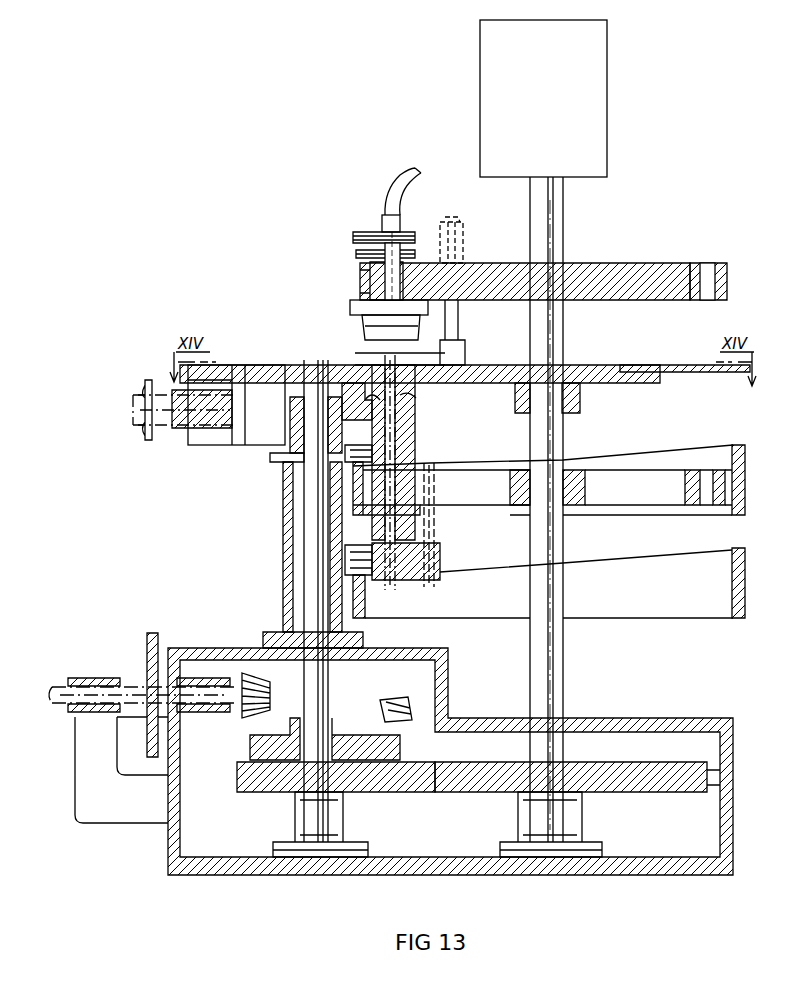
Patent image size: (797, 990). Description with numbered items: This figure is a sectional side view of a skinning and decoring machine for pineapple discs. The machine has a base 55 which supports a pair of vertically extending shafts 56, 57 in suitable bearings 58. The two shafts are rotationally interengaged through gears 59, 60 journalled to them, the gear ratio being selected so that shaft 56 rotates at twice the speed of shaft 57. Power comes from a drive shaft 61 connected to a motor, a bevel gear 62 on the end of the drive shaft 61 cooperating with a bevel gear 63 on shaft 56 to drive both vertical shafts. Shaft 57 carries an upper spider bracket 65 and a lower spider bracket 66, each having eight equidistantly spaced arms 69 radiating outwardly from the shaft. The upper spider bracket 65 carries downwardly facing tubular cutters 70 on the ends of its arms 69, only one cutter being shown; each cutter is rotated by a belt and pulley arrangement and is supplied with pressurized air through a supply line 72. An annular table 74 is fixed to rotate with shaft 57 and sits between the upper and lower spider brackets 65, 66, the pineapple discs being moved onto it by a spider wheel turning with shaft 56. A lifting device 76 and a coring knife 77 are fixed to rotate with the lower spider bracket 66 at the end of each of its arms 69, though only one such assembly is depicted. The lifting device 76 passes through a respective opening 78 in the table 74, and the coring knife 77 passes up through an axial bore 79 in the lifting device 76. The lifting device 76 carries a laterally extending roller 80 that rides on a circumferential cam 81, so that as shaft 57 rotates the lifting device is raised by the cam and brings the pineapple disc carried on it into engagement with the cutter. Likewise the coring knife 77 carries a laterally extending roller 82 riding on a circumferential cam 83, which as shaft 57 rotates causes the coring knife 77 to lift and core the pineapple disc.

The base 55 is at (230, 866).
The shaft 56 is at (318, 680).
The shaft 57 is at (530, 203).
The bearings 58 is at (310, 832).
The gear 59 is at (365, 780).
The gear 60 is at (445, 780).
The drive shaft 61 is at (70, 688).
The bevel gear 62 is at (250, 675).
The bevel gear 63 is at (385, 715).
The upper spider bracket 65 is at (615, 263).
The lower spider bracket 66 is at (610, 480).
The arms 69 is at (690, 265).
The tubular cutters 70 is at (362, 330).
The supply line 72 is at (385, 185).
The annular table 74 is at (355, 252).
The lifting device 76 is at (348, 390).
The coring knife 77 is at (395, 528).
The opening 78 is at (684, 332).
The axial bore 79 is at (400, 392).
The roller 80 is at (345, 458).
The circumferential cam 81 is at (355, 497).
The roller 82 is at (350, 555).
The circumferential cam 83 is at (355, 598).